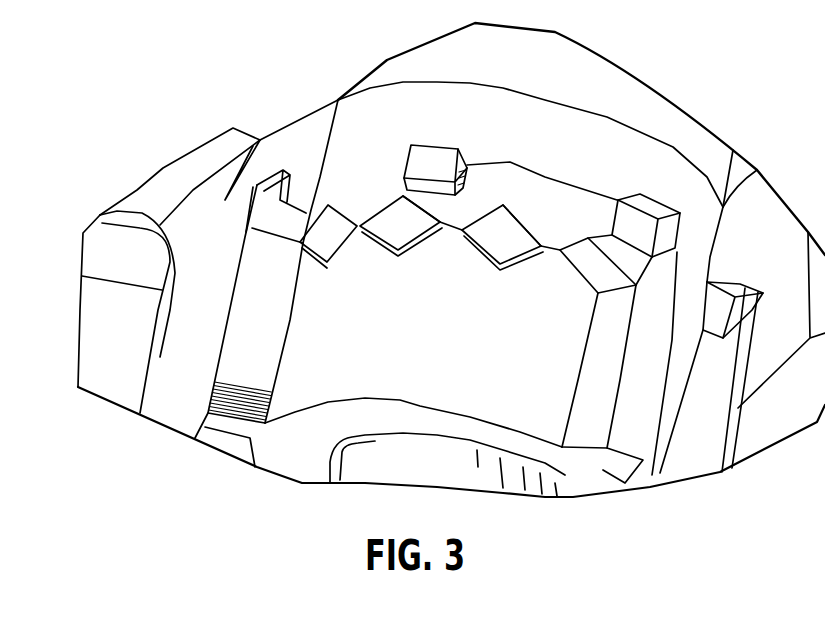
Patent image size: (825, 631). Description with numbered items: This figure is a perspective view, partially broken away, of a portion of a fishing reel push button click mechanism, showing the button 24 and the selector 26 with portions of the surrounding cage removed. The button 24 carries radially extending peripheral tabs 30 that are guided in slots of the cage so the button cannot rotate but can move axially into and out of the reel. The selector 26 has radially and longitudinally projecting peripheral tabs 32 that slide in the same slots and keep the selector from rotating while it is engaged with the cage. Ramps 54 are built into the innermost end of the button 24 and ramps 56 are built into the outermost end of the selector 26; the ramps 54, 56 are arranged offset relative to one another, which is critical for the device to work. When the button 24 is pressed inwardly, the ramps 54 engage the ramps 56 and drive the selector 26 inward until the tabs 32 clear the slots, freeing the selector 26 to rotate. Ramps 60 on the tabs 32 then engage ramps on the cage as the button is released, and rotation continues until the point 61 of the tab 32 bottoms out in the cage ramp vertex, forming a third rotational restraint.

The button 24 is at (612, 85).
The selector 26 is at (282, 448).
The peripheral tabs 30 is at (427, 158).
The peripheral tabs 32 is at (233, 392).
The ramps 54 is at (487, 216).
The ramps 56 is at (340, 236).
The ramps 60 is at (631, 298).
The point 61 is at (695, 317).